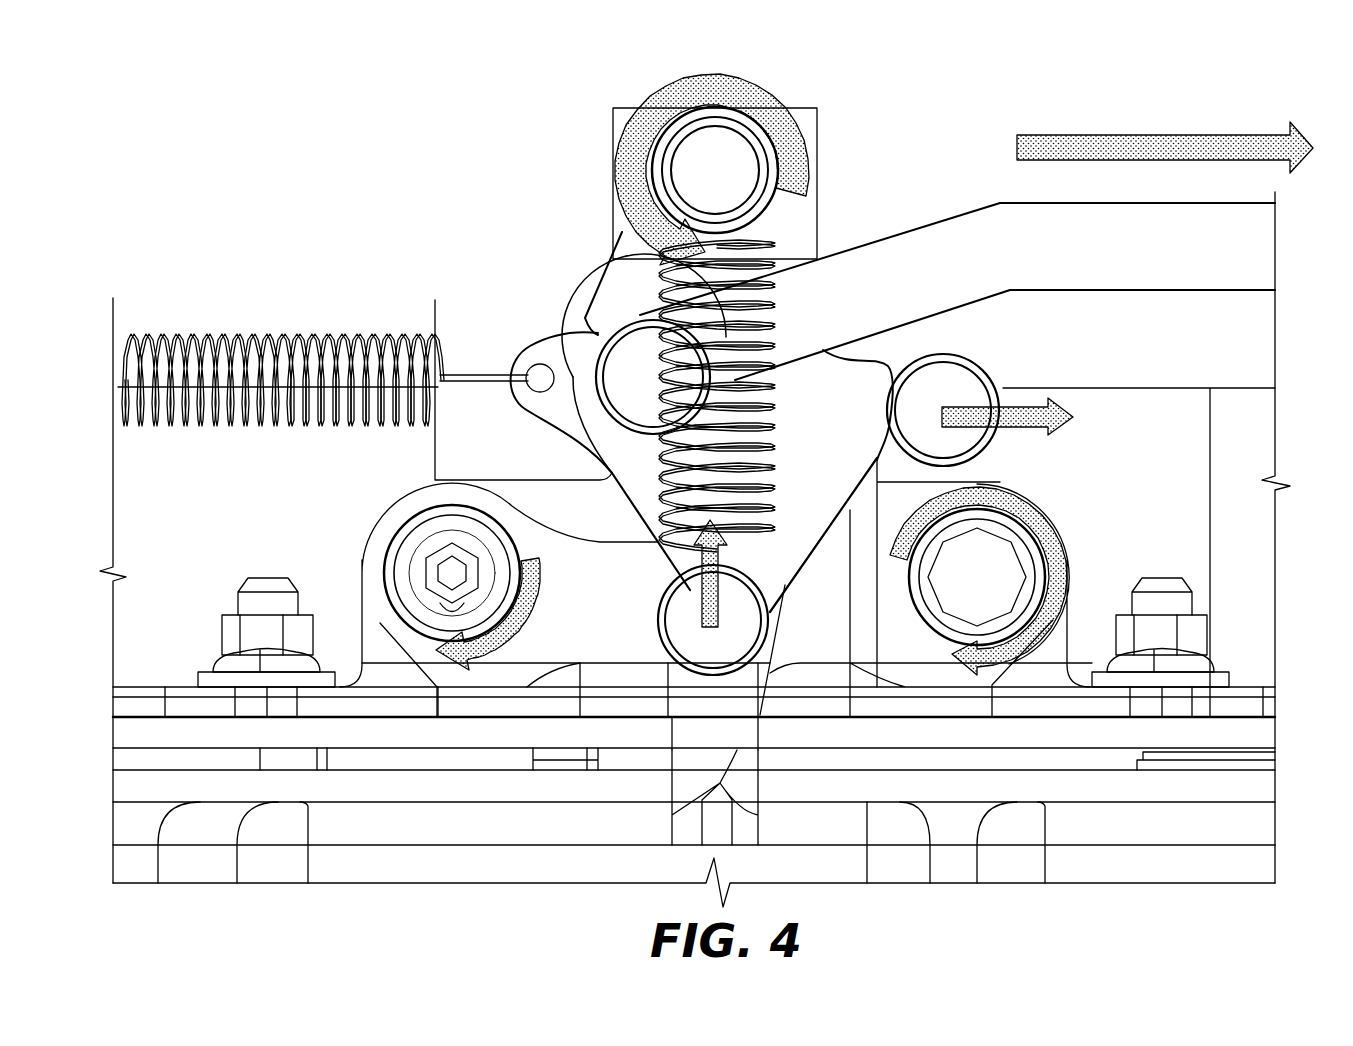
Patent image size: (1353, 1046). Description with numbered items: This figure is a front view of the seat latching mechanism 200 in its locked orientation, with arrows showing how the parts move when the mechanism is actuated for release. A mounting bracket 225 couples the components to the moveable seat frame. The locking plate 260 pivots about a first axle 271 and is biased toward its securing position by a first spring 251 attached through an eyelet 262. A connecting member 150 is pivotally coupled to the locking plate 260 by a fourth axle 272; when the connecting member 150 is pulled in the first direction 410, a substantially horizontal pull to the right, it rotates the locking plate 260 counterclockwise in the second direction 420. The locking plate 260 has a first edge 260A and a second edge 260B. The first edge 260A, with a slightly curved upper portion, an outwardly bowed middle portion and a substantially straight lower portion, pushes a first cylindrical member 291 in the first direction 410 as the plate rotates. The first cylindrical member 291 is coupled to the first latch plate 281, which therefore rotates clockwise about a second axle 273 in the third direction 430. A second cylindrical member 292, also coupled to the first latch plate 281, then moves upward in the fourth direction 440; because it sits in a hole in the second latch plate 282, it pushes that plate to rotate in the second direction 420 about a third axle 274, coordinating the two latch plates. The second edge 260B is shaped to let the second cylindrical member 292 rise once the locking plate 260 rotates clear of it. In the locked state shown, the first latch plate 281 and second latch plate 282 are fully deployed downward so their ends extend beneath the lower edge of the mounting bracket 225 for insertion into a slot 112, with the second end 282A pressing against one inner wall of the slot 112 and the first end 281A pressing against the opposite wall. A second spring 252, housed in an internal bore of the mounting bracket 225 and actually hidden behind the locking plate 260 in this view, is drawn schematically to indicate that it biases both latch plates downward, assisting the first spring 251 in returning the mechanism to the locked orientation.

The slot 112 is at (690, 828).
The connecting member 150 is at (910, 262).
The seat latching mechanism 200 is at (210, 97).
The mounting bracket 225 is at (1048, 705).
The first spring 251 is at (232, 343).
The second spring 252 is at (611, 471).
The locking plate 260 is at (607, 278).
The first edge 260A is at (826, 550).
The second edge 260B is at (645, 547).
The eyelet 262 is at (488, 358).
The first axle 271 is at (688, 160).
The fourth axle 272 is at (628, 362).
The second axle 273 is at (1000, 574).
The third axle 274 is at (445, 576).
The first latch plate 281 is at (895, 650).
The first end 281A is at (770, 785).
The second latch plate 282 is at (518, 650).
The second end 282A is at (652, 773).
The first cylindrical member 291 is at (948, 393).
The second cylindrical member 292 is at (700, 646).
The first direction 410 is at (1125, 145).
The second direction 420 is at (740, 92).
The third direction 430 is at (1030, 528).
The fourth direction 440 is at (765, 590).